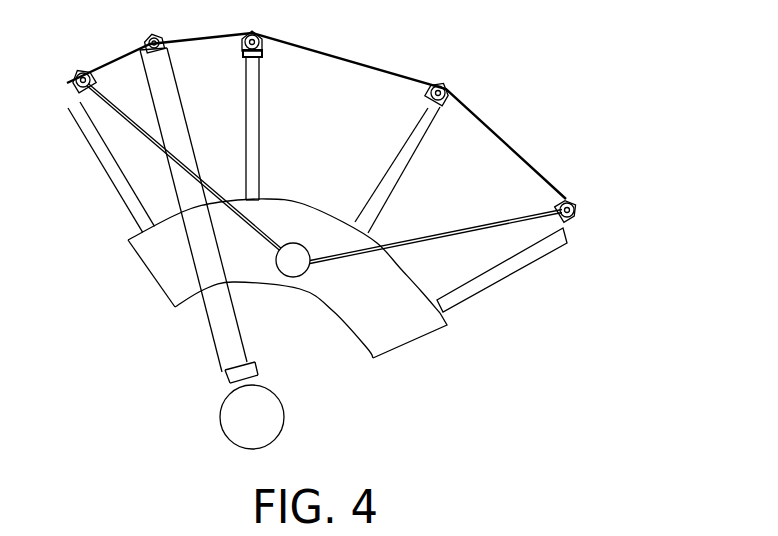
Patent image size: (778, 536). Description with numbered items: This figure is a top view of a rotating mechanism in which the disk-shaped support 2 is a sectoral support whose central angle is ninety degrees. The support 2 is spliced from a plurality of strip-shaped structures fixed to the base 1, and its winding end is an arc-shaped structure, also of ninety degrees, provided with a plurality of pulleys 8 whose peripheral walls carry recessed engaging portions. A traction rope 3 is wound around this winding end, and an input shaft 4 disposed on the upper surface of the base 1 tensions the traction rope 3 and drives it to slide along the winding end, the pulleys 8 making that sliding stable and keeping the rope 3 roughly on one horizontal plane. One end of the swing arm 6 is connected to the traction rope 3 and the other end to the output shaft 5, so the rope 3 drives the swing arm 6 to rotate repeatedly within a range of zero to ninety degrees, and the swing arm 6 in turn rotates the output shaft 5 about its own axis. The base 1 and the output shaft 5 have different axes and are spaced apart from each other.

The base 1 is at (400, 332).
The disk-shaped support 2 is at (493, 278).
The traction rope 3 is at (516, 150).
The input shaft 4 is at (295, 258).
The output shaft 5 is at (263, 427).
The swing arm 6 is at (212, 260).
The pulley 8 is at (575, 203).